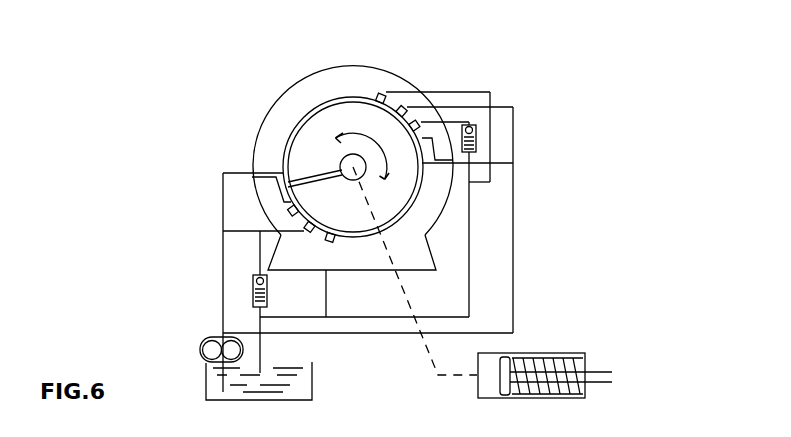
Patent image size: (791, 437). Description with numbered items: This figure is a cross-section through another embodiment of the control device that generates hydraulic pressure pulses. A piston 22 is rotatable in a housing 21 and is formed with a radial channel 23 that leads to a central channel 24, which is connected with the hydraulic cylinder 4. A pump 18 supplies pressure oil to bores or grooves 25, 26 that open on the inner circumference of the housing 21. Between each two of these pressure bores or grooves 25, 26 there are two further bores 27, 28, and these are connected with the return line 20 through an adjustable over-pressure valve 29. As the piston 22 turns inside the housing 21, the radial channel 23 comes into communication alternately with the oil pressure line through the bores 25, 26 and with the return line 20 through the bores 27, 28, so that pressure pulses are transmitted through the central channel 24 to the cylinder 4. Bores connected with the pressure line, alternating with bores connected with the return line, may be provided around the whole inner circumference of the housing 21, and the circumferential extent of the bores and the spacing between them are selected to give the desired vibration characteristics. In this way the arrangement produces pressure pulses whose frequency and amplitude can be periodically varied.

The hydraulic cylinder 4 is at (587, 357).
The pump 18 is at (204, 350).
The return line 20 is at (267, 340).
The housing 21 is at (382, 85).
The piston 22 is at (327, 137).
The radial channel 23 is at (303, 183).
The central channel 24 is at (421, 333).
The bore or groove 25 is at (253, 173).
The bore or groove 26 is at (305, 234).
The further bore 27 is at (286, 212).
The further bore 28 is at (333, 242).
The adjustable over-pressure valve 29 is at (268, 288).